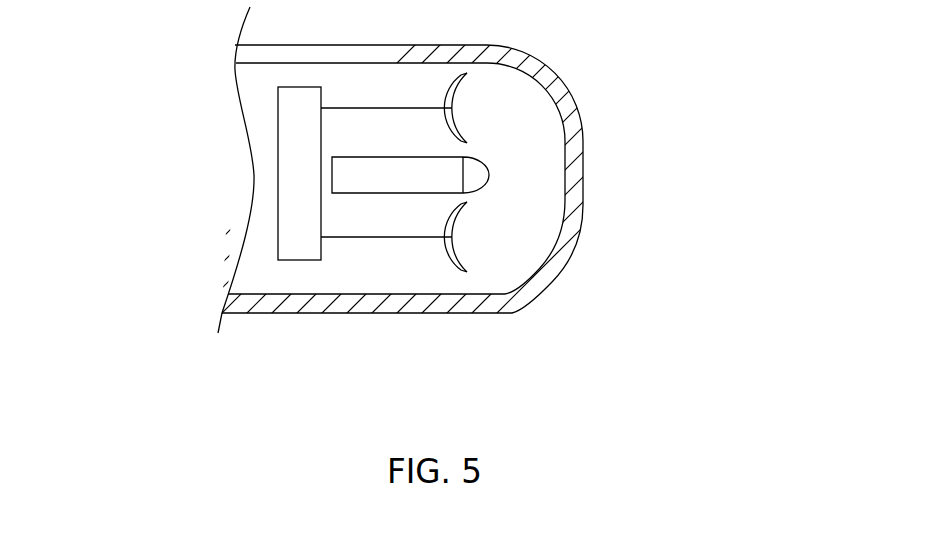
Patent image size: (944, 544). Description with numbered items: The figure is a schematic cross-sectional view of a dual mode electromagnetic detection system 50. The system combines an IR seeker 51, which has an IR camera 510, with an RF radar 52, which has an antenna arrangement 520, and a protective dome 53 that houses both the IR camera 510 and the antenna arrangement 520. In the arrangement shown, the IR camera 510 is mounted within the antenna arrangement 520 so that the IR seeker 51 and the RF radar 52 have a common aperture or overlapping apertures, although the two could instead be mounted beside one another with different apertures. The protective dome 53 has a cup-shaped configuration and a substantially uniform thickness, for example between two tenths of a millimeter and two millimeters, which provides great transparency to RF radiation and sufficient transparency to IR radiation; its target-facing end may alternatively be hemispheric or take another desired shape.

The dual mode electromagnetic detection system 50 is at (481, 187).
The IR seeker 51 is at (443, 251).
The RF radar 52 is at (300, 260).
The protective dome 53 is at (577, 245).
The IR camera 510 is at (475, 173).
The antenna arrangement 520 is at (467, 97).